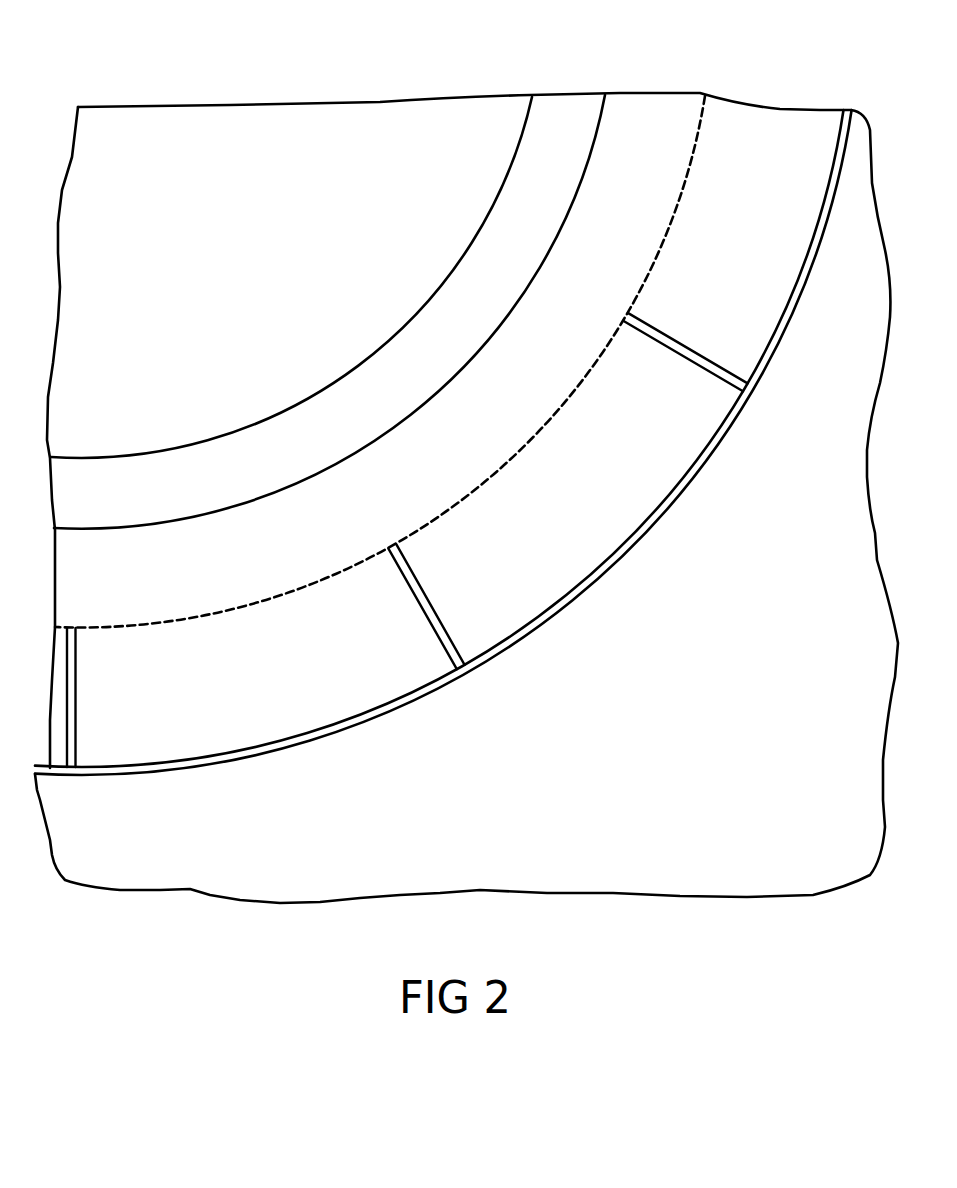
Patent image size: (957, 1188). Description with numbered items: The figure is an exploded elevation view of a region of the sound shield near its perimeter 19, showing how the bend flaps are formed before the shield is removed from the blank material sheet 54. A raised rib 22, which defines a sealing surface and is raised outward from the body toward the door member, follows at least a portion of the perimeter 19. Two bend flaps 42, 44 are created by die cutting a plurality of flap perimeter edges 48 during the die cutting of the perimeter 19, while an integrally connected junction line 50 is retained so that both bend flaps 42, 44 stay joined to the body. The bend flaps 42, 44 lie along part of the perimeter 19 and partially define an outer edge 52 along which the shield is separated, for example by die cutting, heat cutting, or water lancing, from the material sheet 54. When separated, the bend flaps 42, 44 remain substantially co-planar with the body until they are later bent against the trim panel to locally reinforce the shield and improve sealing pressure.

The perimeter 19 is at (38, 774).
The raised rib 22 is at (515, 150).
The bend flap 42 is at (570, 570).
The bend flap 44 is at (188, 745).
The flap perimeter edges 48 is at (75, 734).
The junction line 50 is at (315, 578).
The outer edge 52 is at (680, 500).
The material sheet 54 is at (405, 873).